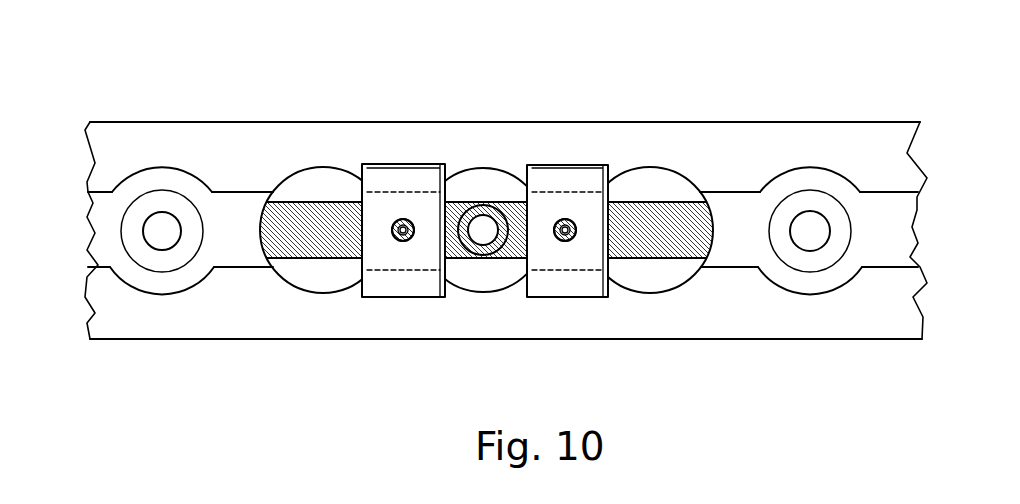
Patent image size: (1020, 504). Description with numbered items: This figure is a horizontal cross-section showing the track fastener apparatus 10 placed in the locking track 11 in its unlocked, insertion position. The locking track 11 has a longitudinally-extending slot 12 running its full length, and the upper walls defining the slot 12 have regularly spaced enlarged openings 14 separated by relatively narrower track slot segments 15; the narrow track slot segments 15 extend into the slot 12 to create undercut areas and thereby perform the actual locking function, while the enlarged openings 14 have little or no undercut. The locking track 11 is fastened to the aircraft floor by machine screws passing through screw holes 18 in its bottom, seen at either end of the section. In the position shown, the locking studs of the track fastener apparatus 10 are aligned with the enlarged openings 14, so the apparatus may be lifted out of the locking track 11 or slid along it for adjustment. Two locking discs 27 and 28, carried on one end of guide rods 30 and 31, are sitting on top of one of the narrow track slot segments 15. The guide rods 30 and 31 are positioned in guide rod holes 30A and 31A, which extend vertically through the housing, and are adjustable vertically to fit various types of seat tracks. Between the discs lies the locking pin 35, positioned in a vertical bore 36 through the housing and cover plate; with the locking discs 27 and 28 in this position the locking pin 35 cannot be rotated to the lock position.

The track fastener apparatus 10 is at (655, 193).
The locking track 11 is at (188, 130).
The longitudinally-extending slot 12 is at (725, 232).
The enlarged openings 14 is at (178, 176).
The narrow track slot segments 15 is at (238, 198).
The screw holes 18 is at (152, 246).
The locking disc 27 is at (583, 207).
The locking disc 28 is at (413, 178).
The guide rod 30 is at (576, 238).
The guide rod hole 30A is at (565, 220).
The guide rod 31 is at (399, 243).
The guide rod hole 31A is at (410, 238).
The locking pin 35 is at (497, 203).
The vertical bore 36 is at (465, 202).